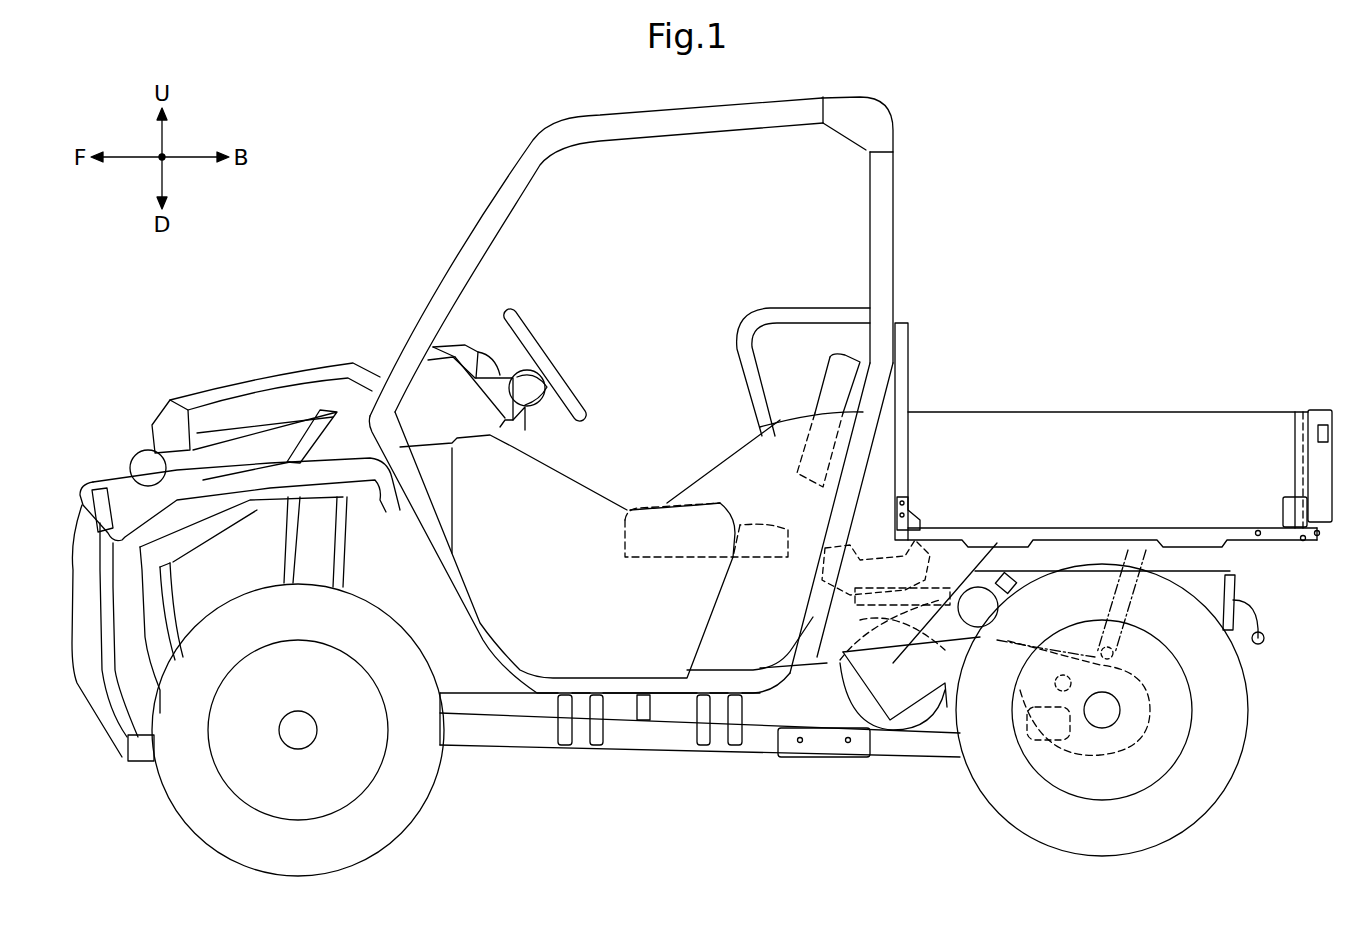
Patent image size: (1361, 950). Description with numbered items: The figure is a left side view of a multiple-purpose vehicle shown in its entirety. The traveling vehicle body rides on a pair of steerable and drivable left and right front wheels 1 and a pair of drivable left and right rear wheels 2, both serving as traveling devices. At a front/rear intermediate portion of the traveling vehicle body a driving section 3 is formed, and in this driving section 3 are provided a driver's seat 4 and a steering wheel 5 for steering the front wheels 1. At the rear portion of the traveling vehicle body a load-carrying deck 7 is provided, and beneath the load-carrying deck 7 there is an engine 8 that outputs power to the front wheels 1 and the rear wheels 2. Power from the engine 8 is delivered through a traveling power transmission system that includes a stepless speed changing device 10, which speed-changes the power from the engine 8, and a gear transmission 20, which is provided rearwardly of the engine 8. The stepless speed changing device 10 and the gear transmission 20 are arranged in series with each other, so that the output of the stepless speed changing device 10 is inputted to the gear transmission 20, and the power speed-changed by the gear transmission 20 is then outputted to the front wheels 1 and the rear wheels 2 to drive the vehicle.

The front wheels 1 is at (372, 820).
The rear wheels 2 is at (1178, 818).
The driving section 3 is at (446, 253).
The driver's seat 4 is at (818, 390).
The steering wheel 5 is at (548, 362).
The load-carrying deck 7 is at (1090, 410).
The engine 8 is at (910, 503).
The stepless speed changing device 10 is at (888, 680).
The gear transmission 20 is at (1103, 727).